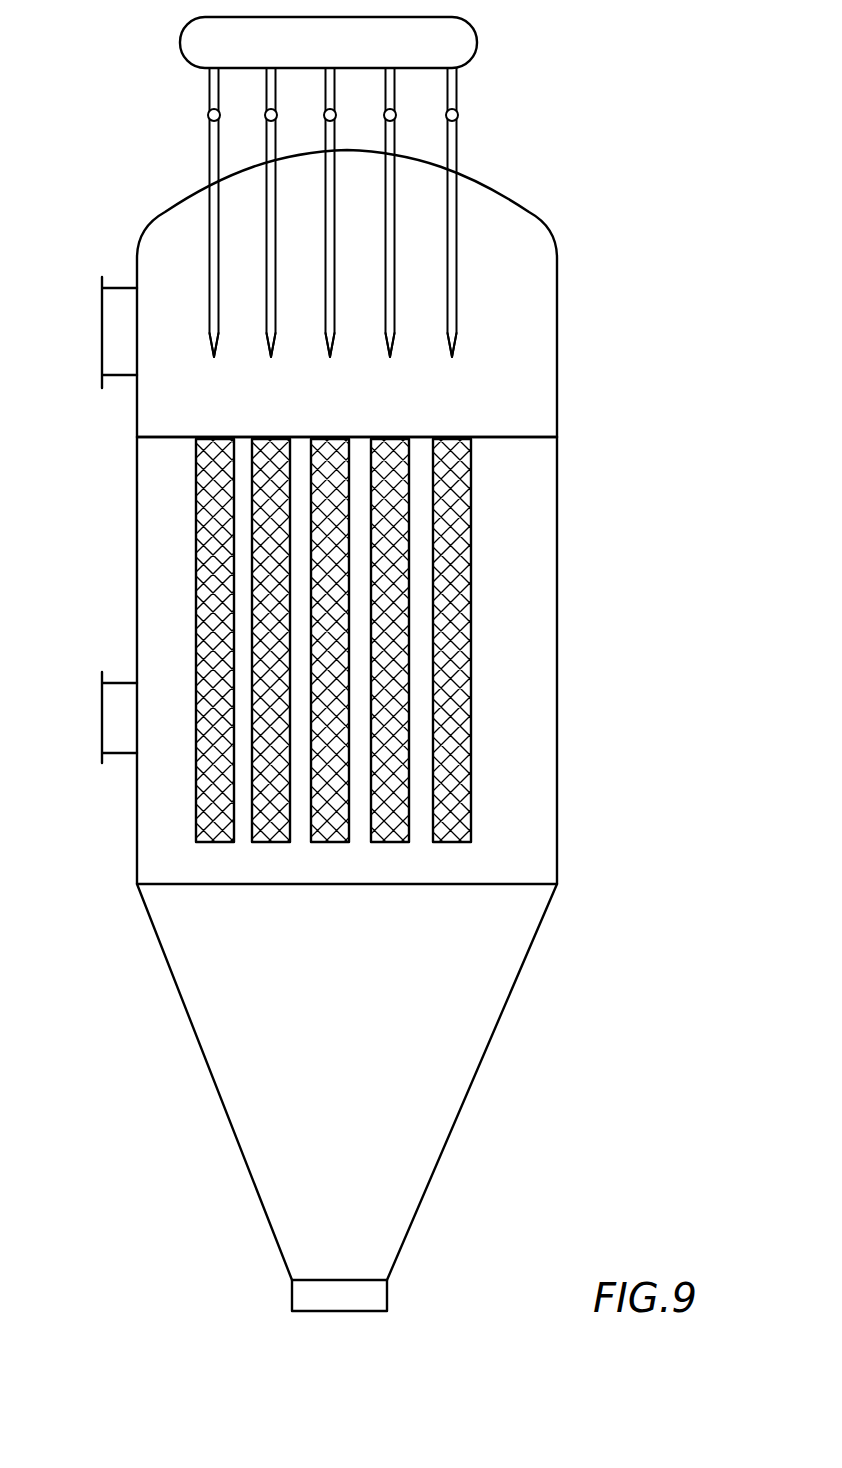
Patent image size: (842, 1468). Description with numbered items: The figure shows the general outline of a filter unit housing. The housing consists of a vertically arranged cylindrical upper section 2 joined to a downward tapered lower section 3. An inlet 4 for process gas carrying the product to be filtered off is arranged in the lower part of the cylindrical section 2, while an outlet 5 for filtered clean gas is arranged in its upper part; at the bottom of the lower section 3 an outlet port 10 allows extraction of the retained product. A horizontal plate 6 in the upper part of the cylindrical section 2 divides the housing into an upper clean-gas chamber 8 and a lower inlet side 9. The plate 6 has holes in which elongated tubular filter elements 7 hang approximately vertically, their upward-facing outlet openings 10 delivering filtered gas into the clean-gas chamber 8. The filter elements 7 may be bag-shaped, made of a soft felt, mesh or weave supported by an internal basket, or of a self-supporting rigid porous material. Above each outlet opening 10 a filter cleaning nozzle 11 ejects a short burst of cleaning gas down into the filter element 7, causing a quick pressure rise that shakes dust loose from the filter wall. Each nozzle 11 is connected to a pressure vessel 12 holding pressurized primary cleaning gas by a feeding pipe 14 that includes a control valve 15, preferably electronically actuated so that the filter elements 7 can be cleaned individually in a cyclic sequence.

The cylindrical upper section 2 is at (558, 500).
The downward tapered lower section 3 is at (512, 988).
The inlet 4 is at (100, 683).
The outlet 5 is at (100, 292).
The horizontal plate 6 is at (157, 437).
The filter elements 7 is at (208, 565).
The clean-gas chamber 8 is at (540, 338).
The inlet side 9 is at (533, 697).
The outlet port / outlet openings 10 is at (335, 437).
The filter cleaning nozzle 11 is at (219, 338).
The pressure vessel 12 is at (460, 48).
The feeding pipe 14 is at (212, 242).
The control valve 15 is at (208, 115).